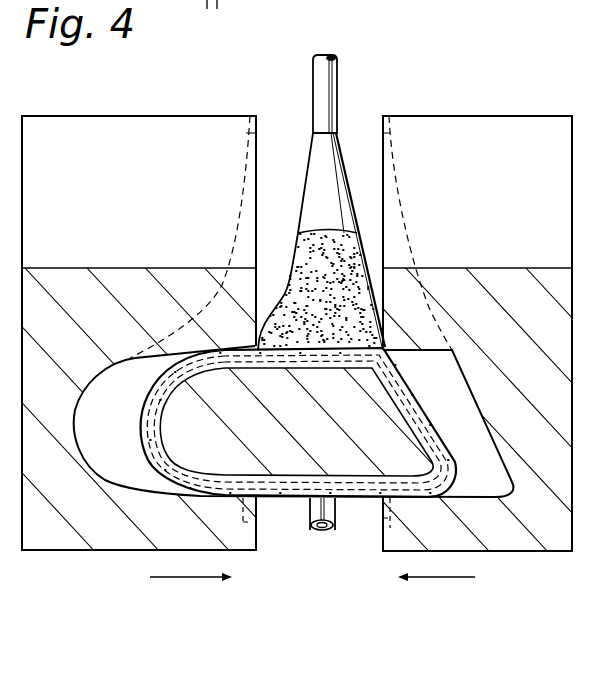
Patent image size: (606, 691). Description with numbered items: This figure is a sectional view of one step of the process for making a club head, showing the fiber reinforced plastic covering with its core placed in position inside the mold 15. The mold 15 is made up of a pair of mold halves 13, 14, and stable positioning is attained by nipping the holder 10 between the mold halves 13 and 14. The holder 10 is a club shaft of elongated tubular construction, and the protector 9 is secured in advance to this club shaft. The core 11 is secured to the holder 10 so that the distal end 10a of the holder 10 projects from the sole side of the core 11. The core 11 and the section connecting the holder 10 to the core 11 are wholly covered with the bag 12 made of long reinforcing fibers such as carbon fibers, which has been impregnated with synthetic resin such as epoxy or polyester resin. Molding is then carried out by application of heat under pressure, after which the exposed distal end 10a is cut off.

The protector 9 is at (306, 179).
The holder 10 is at (338, 82).
The distal end 10a is at (323, 530).
The core 11 is at (288, 473).
The bag 12 is at (172, 480).
The mold half 13 is at (122, 118).
The mold half 14 is at (488, 118).
The mold 15 is at (245, 102).